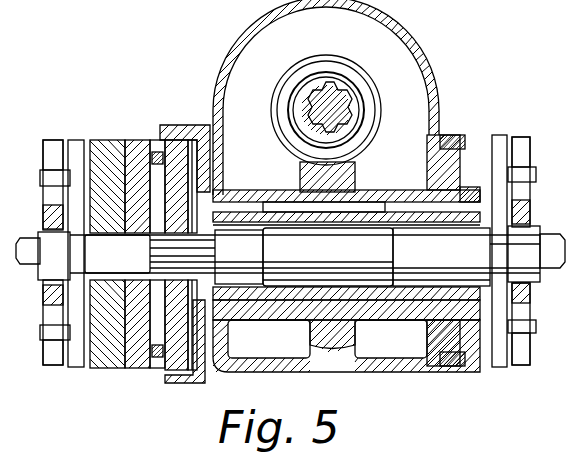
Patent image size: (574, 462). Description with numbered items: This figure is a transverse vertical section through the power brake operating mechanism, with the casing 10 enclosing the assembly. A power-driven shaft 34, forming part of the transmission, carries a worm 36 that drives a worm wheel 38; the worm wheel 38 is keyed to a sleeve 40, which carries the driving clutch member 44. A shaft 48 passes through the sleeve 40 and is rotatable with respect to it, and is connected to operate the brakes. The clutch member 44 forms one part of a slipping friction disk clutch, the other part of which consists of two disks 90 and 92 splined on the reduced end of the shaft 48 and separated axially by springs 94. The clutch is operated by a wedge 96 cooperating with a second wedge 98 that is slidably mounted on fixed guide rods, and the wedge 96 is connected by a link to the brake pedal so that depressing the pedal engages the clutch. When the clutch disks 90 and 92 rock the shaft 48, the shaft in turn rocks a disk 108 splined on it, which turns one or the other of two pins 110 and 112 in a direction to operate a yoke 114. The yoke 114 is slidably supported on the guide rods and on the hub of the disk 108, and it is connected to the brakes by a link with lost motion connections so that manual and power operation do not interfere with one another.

The housing 10 is at (422, 44).
The power-driven shaft 34 is at (336, 92).
The worm 36 is at (362, 136).
The worm wheel 38 is at (358, 348).
The sleeve 40 is at (298, 293).
The driving clutch member 44 is at (196, 148).
The shaft 48 is at (365, 255).
The disk 90 is at (190, 130).
The disk 92 is at (155, 142).
The springs 94 is at (170, 142).
The wedge 96 is at (103, 140).
The wedge 98 is at (138, 145).
The disk 108 is at (78, 352).
The pin 110 is at (48, 178).
The pin 112 is at (52, 333).
The yoke 114 is at (53, 155).